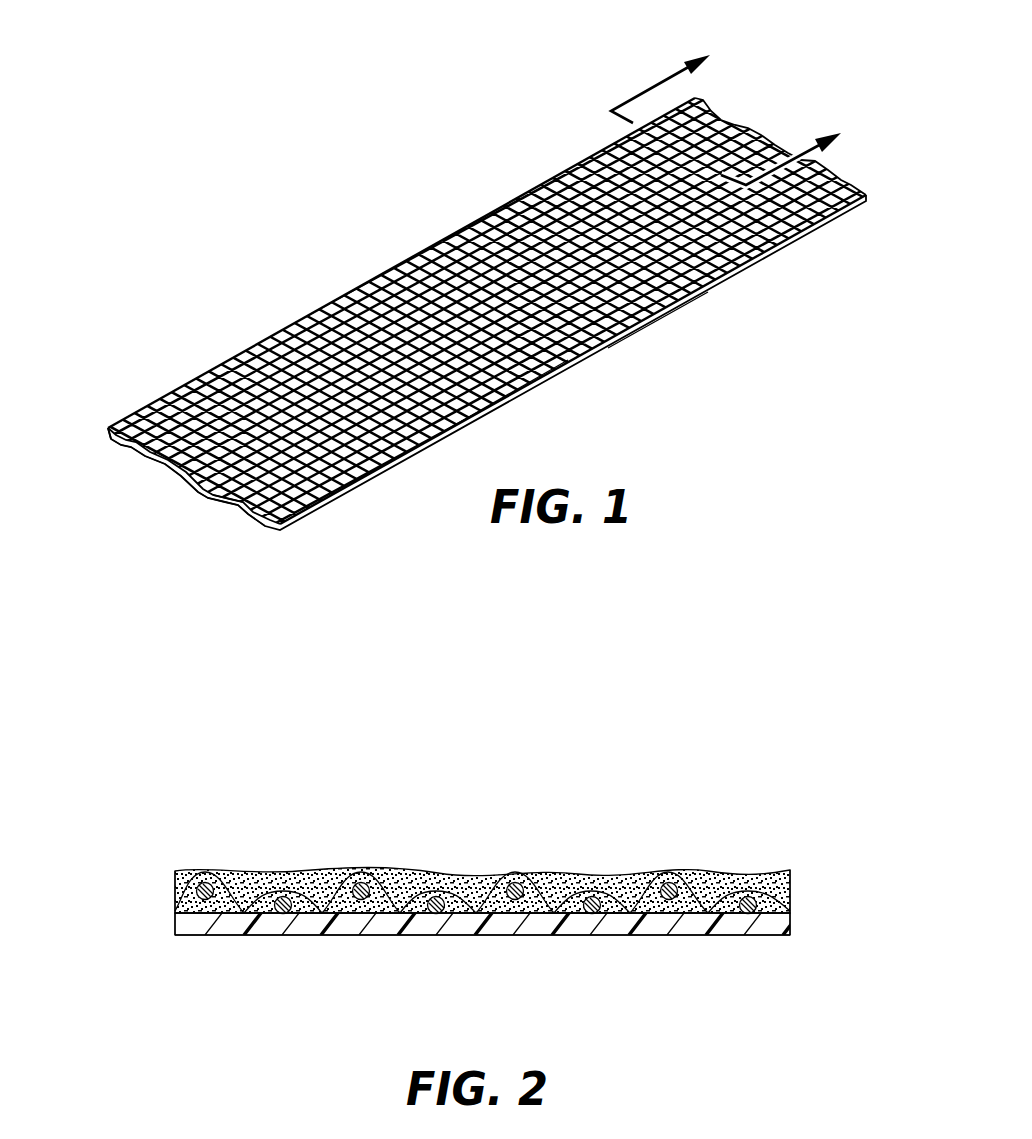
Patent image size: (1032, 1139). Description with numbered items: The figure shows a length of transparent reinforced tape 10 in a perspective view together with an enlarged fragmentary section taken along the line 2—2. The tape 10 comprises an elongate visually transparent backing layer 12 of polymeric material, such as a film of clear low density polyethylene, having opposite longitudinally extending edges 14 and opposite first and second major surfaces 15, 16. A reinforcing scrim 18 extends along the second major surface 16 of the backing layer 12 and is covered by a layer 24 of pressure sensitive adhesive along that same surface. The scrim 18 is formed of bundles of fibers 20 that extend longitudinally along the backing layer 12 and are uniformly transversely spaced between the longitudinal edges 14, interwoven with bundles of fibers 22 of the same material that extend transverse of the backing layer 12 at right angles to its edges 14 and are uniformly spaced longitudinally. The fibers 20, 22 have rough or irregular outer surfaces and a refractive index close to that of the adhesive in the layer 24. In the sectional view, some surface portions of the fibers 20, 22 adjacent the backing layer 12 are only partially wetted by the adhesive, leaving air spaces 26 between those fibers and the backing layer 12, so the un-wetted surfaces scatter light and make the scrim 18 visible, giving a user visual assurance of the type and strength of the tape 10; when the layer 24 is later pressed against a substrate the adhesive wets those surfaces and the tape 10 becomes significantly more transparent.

In FIG. 1, the section line 2 is at (740, 105).
In FIG. 1, the transparent reinforced tape 10 is at (745, 84).
In FIG. 2, the transparent reinforced tape 10 is at (717, 812).
In FIG. 1, the backing layer 12 is at (254, 523).
In FIG. 2, the backing layer 12 is at (722, 916).
In FIG. 1, the longitudinally extending edges 14 is at (100, 421).
In FIG. 2, the longitudinally extending edges 14 is at (167, 912).
In FIG. 1, the first major surface 15 is at (207, 499).
In FIG. 2, the first major surface 15 is at (480, 928).
In FIG. 1, the second major surface 16 is at (231, 492).
In FIG. 2, the second major surface 16 is at (447, 868).
In FIG. 1, the reinforcing scrim 18 is at (626, 297).
In FIG. 2, the reinforcing scrim 18 is at (585, 906).
In FIG. 1, the bundles of fibers 20 is at (383, 427).
In FIG. 2, the bundles of fibers 20 is at (350, 874).
In FIG. 1, the bundles of fibers 22 is at (441, 247).
In FIG. 2, the bundles of fibers 22 is at (548, 872).
In FIG. 1, the layer of pressure sensitive adhesive 24 is at (116, 437).
In FIG. 2, the layer of pressure sensitive adhesive 24 is at (621, 866).
In FIG. 2, the air spaces 26 is at (416, 904).